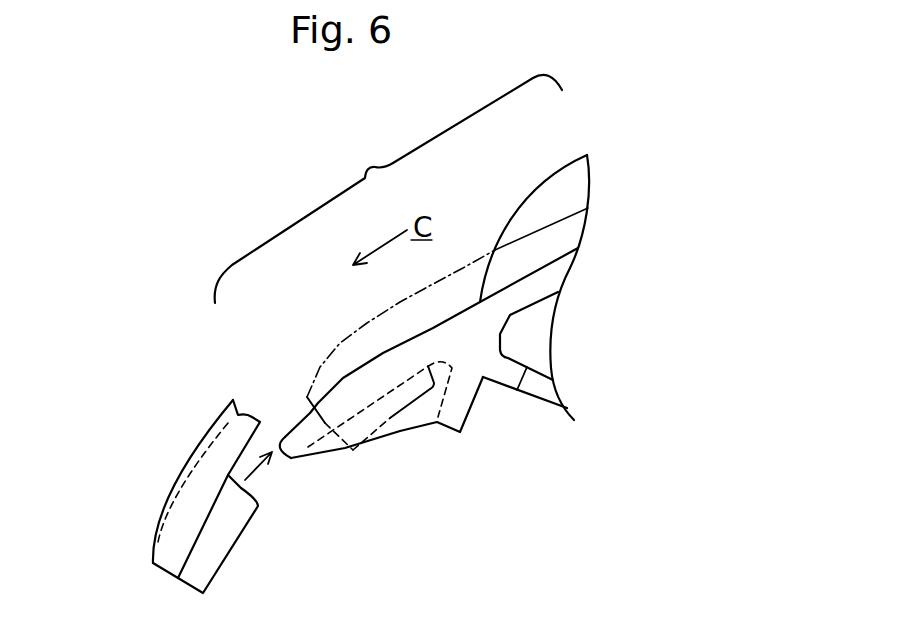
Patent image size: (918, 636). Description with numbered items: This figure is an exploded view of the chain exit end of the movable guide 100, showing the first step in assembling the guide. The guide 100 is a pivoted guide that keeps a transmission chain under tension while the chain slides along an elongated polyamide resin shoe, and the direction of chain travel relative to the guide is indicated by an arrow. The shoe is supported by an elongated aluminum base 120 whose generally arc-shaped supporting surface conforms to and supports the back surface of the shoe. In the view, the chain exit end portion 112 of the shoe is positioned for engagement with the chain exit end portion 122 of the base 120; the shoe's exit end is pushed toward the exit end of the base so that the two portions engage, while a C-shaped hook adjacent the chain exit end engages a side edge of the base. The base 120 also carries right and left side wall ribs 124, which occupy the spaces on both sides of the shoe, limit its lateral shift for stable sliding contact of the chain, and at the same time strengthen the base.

The movable guide 100 is at (473, 258).
The chain exit end portion of the shoe 112 is at (217, 553).
The base 120 is at (392, 158).
The chain exit end portion of the base 122 is at (295, 438).
The side wall ribs 124 is at (552, 196).